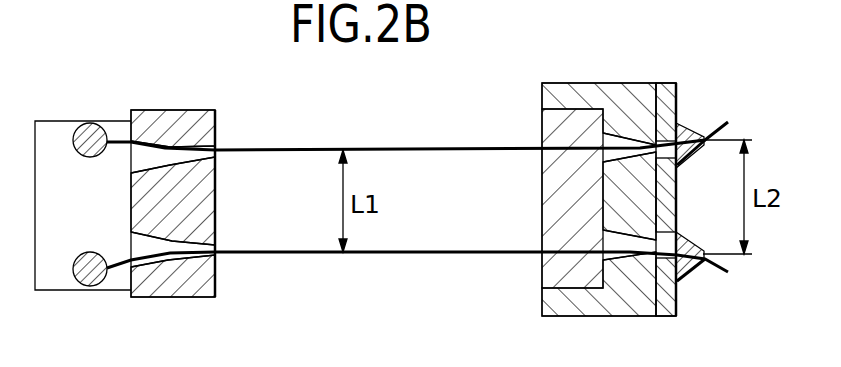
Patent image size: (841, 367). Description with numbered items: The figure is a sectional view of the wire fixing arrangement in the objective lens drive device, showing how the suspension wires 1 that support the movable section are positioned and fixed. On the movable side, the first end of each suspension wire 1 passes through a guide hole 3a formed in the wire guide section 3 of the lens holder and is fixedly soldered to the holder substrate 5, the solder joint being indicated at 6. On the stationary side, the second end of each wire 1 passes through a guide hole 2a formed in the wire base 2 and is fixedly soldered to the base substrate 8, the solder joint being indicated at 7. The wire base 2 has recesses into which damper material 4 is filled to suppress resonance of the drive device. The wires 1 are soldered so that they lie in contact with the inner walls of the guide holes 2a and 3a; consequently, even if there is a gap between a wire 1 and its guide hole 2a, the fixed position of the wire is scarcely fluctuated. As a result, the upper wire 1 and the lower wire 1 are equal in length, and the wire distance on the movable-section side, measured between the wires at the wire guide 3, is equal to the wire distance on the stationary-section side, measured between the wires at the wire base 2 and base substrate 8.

The suspension wire 1 is at (307, 149).
The wire base 2 is at (588, 97).
The guide hole of wire base 2a is at (618, 155).
The wire guide section 3 is at (192, 111).
The guide hole of wire guide 3a is at (218, 157).
The damper material 4 is at (552, 278).
The holder substrate 5 is at (50, 130).
The solder fixing to holder substrate 6 is at (95, 123).
The solder fixing to base substrate 7 is at (693, 120).
The base substrate 8 is at (665, 95).